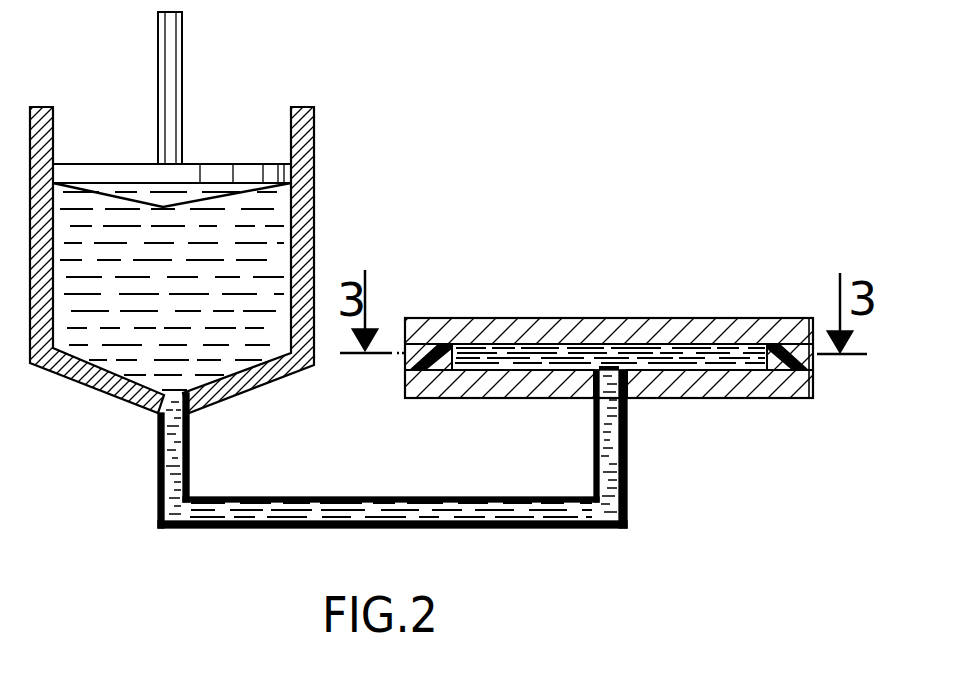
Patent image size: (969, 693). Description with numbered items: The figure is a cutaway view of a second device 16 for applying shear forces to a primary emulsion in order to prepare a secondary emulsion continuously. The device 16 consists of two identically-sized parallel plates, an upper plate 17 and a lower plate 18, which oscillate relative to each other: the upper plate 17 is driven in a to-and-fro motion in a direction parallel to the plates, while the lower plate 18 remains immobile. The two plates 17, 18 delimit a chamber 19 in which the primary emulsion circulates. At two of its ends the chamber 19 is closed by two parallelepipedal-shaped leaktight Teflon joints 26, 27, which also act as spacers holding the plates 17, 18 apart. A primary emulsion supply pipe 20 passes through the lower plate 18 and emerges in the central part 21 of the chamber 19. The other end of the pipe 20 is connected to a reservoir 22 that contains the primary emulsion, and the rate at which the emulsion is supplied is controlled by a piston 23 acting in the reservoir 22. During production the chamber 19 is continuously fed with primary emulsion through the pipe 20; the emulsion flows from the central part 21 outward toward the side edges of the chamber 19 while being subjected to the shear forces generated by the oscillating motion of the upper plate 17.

The second device 16 is at (455, 316).
The upper plate 17 is at (492, 340).
The lower plate 18 is at (708, 390).
The chamber 19 is at (636, 358).
The primary emulsion supply pipe 20 is at (540, 530).
The central part 21 is at (608, 370).
The reservoir 22 is at (318, 232).
The piston 23 is at (183, 72).
The leaktight Teflon joint 26 is at (435, 367).
The leaktight Teflon joint 27 is at (810, 318).